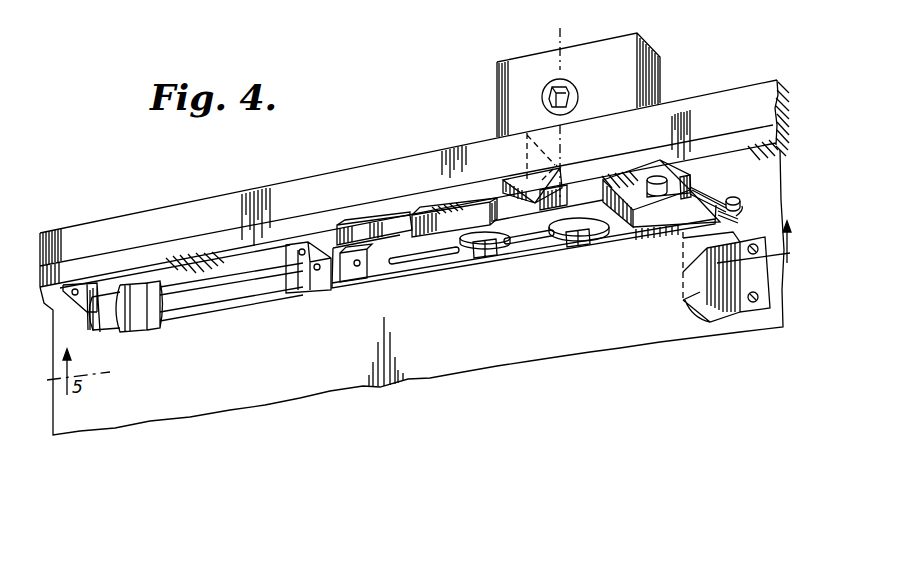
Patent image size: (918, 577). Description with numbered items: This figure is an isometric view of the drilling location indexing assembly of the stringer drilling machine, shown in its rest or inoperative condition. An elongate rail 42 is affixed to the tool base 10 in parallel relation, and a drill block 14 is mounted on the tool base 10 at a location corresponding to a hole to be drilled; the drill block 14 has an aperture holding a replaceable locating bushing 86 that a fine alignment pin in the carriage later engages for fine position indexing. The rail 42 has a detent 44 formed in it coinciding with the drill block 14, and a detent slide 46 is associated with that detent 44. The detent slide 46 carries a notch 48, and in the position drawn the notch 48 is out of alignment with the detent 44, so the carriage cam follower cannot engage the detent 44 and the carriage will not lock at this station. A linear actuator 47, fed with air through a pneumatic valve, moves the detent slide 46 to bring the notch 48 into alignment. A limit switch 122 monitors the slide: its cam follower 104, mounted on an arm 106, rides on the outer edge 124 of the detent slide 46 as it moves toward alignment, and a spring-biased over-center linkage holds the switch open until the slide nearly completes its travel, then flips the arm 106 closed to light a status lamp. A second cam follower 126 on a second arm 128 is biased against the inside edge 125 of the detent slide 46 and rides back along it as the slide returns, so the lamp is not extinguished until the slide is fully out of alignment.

The tool base 10 is at (727, 97).
The drill block 14 is at (626, 69).
The locating bushing 86 is at (577, 80).
The rail 42 is at (317, 219).
The detent 44 is at (563, 180).
The detent slide 46 is at (603, 242).
The linear actuator 47 is at (232, 297).
The notch 48 is at (400, 227).
The cam follower 104 is at (741, 199).
The arm 106 is at (738, 214).
The limit switch 122 is at (713, 311).
The outer edge 124 is at (697, 188).
The inside edge 125 is at (682, 178).
The second cam follower 126 is at (653, 177).
The second arm 128 is at (653, 203).